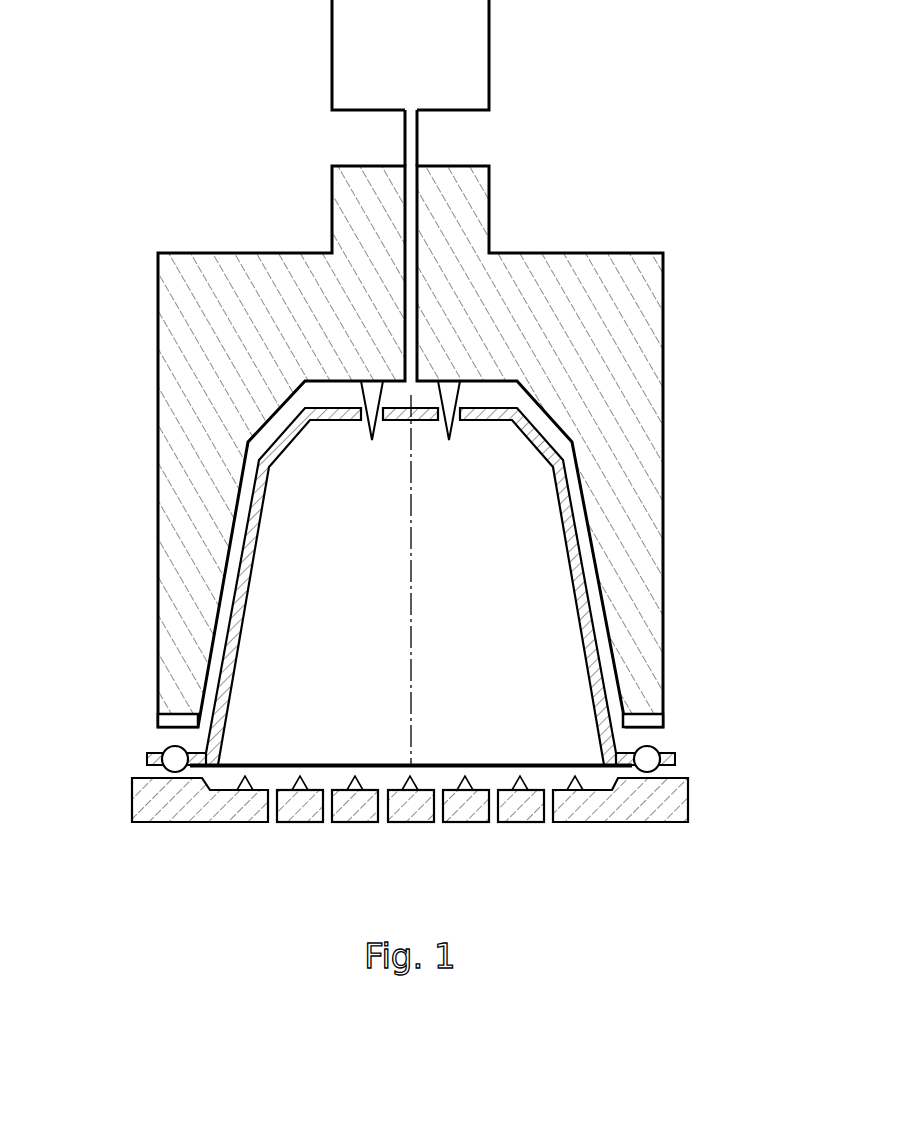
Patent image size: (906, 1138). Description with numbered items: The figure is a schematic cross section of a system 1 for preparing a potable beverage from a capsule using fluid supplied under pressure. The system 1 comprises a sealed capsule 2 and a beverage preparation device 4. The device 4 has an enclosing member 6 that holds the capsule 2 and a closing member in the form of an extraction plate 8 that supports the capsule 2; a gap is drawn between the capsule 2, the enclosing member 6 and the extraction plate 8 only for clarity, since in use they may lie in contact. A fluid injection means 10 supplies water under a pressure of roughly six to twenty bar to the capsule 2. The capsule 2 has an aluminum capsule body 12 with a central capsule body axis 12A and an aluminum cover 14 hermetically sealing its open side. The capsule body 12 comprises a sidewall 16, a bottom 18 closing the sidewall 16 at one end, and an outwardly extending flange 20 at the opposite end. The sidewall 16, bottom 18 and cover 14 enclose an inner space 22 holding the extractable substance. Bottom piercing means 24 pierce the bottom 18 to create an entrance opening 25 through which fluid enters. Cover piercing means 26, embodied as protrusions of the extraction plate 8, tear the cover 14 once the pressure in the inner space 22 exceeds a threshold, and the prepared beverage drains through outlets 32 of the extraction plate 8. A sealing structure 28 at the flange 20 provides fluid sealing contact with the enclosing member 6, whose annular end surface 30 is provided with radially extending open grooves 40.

The system 1 is at (682, 411).
The sealed capsule 2 is at (570, 518).
The beverage preparation device 4 is at (682, 521).
The enclosing member 6 is at (663, 570).
The closing member 8 is at (622, 823).
The fluid injection means 10 is at (410, 55).
The capsule body 12 is at (600, 693).
The central capsule body axis 12A is at (410, 613).
The cover 14 is at (495, 766).
The sidewall 16 is at (592, 642).
The bottom 18 is at (485, 413).
The outwardly extending flange 20 is at (667, 760).
The inner space 22 is at (320, 661).
The bottom piercing means 24 is at (450, 393).
The entrance opening 25 is at (460, 424).
The cover piercing means 26 is at (355, 781).
The sealing structure 28 is at (172, 760).
The free annular end surface 30 is at (172, 729).
The outlets 32 is at (383, 826).
The radially extending open grooves 40 is at (179, 721).